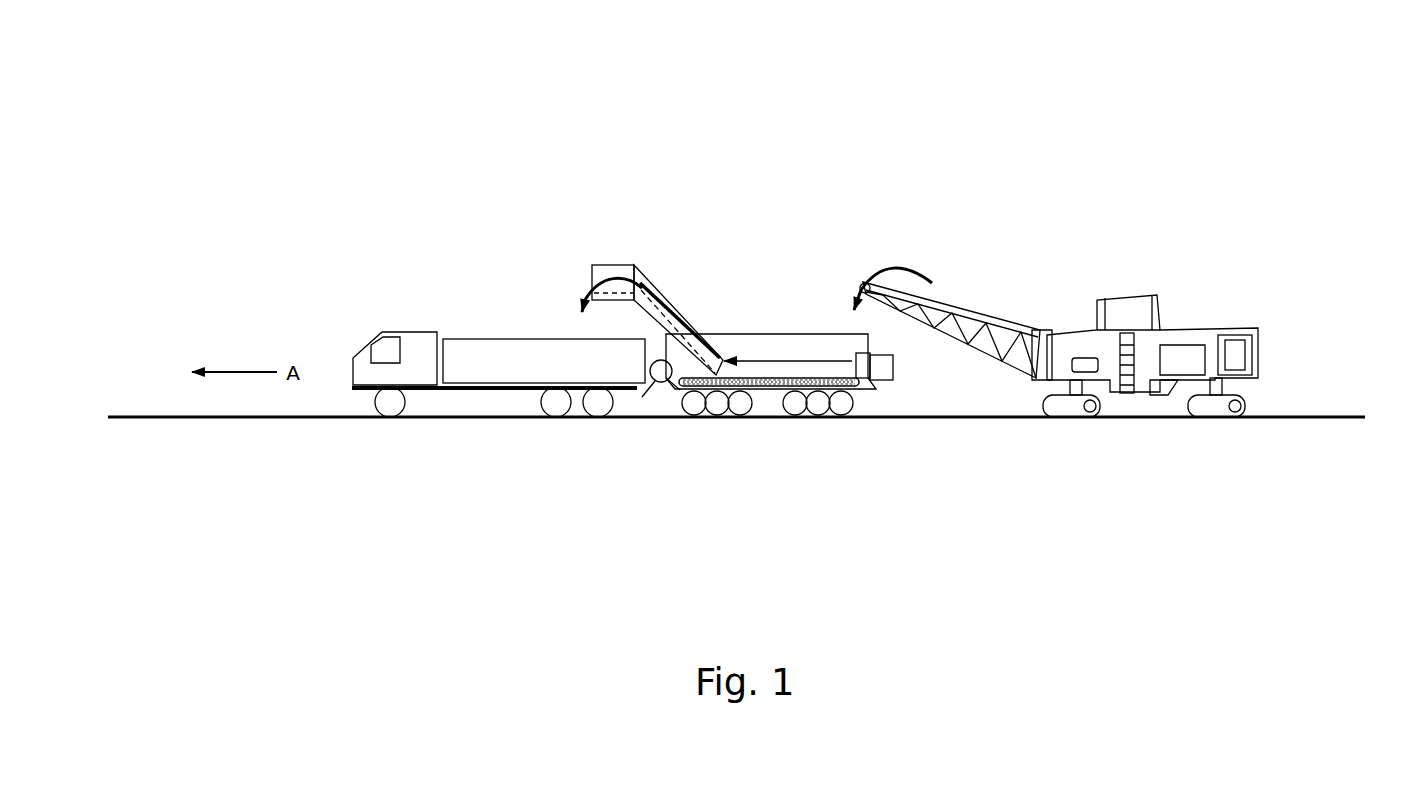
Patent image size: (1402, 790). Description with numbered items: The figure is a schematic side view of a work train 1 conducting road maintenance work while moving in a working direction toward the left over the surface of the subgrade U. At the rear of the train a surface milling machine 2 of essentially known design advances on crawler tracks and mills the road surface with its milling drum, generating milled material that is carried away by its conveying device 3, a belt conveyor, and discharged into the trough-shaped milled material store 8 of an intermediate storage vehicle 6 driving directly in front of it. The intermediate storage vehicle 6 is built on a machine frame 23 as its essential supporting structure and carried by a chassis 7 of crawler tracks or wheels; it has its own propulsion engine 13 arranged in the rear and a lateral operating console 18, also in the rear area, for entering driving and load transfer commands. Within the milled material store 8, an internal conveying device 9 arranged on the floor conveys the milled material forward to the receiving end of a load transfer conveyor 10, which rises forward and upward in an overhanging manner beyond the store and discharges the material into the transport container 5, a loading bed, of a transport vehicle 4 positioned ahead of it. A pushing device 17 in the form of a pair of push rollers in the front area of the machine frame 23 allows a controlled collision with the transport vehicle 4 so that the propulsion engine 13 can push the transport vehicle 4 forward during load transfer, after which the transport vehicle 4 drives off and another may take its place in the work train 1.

The work train 1 is at (762, 112).
The surface milling machine 2 is at (1044, 257).
The conveying device 3 is at (947, 320).
The transport vehicle 4 is at (498, 405).
The transport container 5 is at (487, 354).
The intermediate storage vehicle 6 is at (756, 371).
The chassis 7 is at (726, 388).
The milled material store 8 is at (817, 337).
The internal conveying device 9 is at (799, 386).
The load transfer conveyor 10 is at (608, 278).
The propulsion engine 13 is at (888, 362).
The pushing device 17 is at (652, 381).
The lateral operating console 18 is at (864, 378).
The machine frame 23 is at (675, 388).
The subgrade U is at (501, 420).